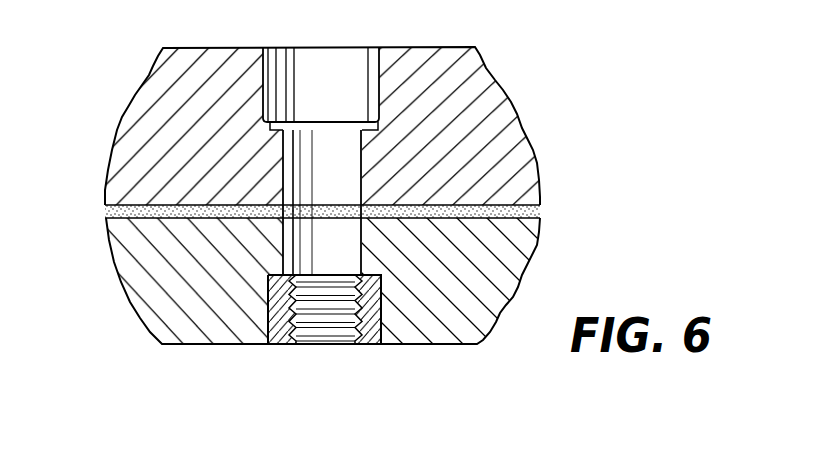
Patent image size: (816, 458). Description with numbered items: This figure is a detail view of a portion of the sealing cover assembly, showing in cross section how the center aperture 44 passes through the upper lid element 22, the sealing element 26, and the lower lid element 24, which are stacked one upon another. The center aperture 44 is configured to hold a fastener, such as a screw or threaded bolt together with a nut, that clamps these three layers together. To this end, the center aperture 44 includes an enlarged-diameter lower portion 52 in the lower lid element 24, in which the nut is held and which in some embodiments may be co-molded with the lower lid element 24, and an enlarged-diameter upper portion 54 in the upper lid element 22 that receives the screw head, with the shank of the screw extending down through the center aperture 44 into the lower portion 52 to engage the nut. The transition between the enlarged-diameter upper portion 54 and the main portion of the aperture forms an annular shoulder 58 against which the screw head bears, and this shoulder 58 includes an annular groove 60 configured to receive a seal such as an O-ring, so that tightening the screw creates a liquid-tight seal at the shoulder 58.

The upper lid element 22 is at (138, 121).
The lower lid element 24 is at (133, 290).
The sealing element 26 is at (105, 212).
The center aperture 44 is at (325, 60).
The enlarged-diameter lower portion 52 is at (268, 322).
The enlarged-diameter upper portion 54 is at (263, 90).
The annular shoulder 58 is at (363, 118).
The annular groove 60 is at (368, 80).